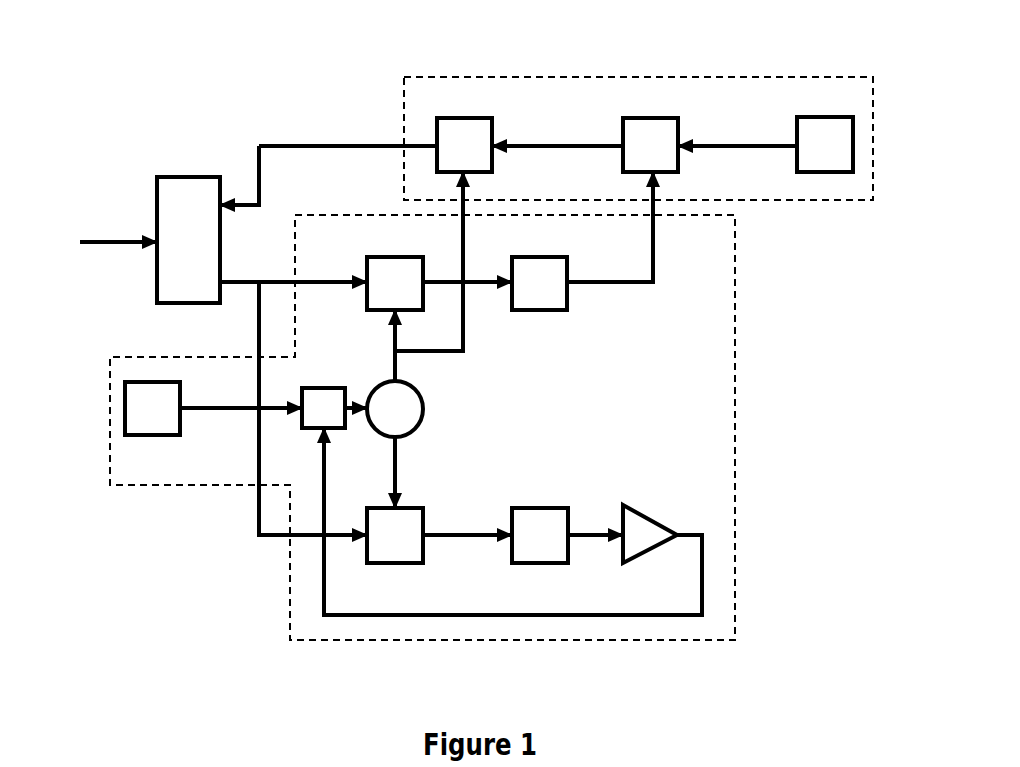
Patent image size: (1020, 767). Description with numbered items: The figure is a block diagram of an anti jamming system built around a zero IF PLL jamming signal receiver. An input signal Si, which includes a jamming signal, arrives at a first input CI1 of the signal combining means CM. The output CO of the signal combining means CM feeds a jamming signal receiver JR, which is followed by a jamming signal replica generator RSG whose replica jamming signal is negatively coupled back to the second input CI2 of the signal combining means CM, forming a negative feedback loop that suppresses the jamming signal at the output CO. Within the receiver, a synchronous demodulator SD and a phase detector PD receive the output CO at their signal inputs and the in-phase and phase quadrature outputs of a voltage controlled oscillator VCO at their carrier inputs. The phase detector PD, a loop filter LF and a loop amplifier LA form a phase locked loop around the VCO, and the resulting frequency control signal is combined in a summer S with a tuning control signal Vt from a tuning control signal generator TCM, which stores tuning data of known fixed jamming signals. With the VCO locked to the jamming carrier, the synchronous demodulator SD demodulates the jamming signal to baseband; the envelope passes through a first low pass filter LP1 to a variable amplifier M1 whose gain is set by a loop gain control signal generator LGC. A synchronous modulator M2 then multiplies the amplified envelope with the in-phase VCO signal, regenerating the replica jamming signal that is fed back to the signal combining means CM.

The signal combining means CM is at (188, 226).
The input signal Si is at (107, 242).
The first input CI1 is at (153, 246).
The second input CI2 is at (224, 206).
The output CO is at (222, 278).
The synchronous modulator M2 is at (464, 132).
The variable amplifier M1 is at (585, 132).
The loop gain control signal generator LGC is at (765, 131).
The jamming signal replica generator RSG is at (670, 149).
The synchronous demodulator SD is at (439, 269).
The first low pass filter LP1 is at (582, 241).
The tuning control signal generator TCM is at (150, 429).
The tuning control signal Vt is at (241, 390).
The summer S is at (334, 395).
The voltage controlled oscillator VCO is at (422, 340).
The phase detector PD is at (439, 522).
The loop filter LF is at (567, 522).
The loop amplifier LA is at (513, 521).
The jamming signal receiver JR is at (440, 427).